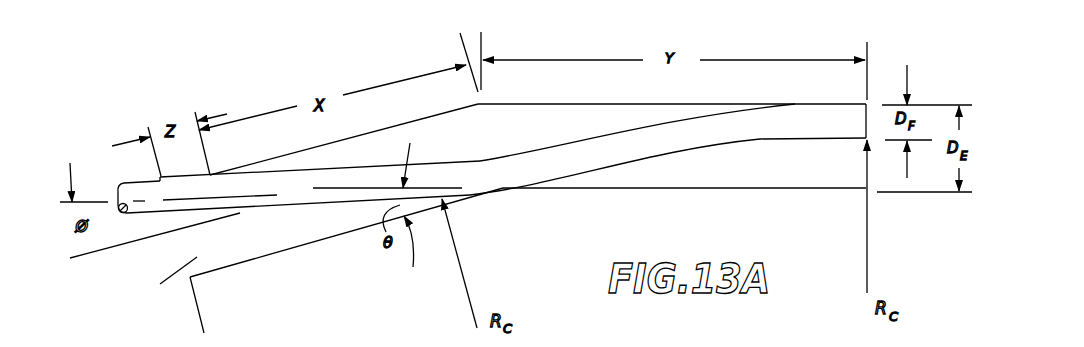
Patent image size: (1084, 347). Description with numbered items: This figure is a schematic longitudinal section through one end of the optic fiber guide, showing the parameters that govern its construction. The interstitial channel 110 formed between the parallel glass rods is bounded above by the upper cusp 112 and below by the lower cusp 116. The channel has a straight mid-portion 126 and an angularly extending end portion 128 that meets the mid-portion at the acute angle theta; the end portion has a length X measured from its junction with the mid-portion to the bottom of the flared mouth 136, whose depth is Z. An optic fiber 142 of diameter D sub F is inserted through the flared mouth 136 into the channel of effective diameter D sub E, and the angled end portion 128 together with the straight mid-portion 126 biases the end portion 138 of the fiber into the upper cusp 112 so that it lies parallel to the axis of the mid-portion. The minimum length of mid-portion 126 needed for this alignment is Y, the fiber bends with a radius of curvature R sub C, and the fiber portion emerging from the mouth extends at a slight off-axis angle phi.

The interstitial channel 110 is at (550, 77).
The upper cusp 112 is at (297, 158).
The lower cusp 116 is at (314, 227).
The straight mid-portion 126 is at (793, 148).
The end portion 128 is at (371, 153).
The flared mouth 136 is at (88, 257).
The end portion of optic fiber 138 is at (845, 110).
The optic fiber 142 is at (128, 182).